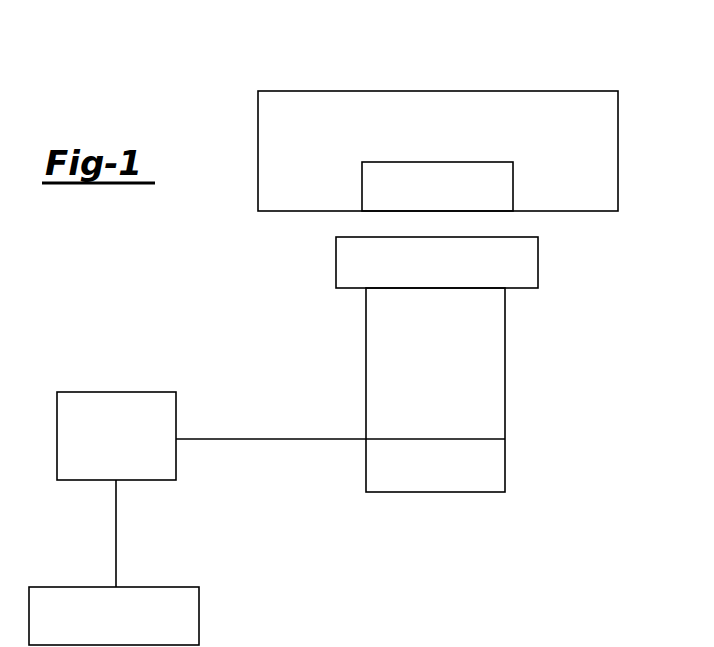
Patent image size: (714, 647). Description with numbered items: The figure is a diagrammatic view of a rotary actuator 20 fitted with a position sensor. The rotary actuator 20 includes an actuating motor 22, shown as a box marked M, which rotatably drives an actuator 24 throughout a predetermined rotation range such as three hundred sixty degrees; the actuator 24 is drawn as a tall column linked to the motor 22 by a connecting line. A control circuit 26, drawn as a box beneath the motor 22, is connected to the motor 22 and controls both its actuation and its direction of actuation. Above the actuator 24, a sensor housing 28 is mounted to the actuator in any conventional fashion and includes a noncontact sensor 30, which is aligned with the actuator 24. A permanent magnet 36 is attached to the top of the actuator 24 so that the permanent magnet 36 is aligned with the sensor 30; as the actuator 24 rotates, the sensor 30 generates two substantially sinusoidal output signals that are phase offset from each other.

The rotary actuator 20 is at (600, 351).
The actuating motor 22 is at (103, 393).
The actuator 24 is at (500, 474).
The control circuit 26 is at (201, 622).
The sensor housing 28 is at (312, 91).
The noncontact sensor 30 is at (485, 161).
The permanent magnet 36 is at (533, 264).